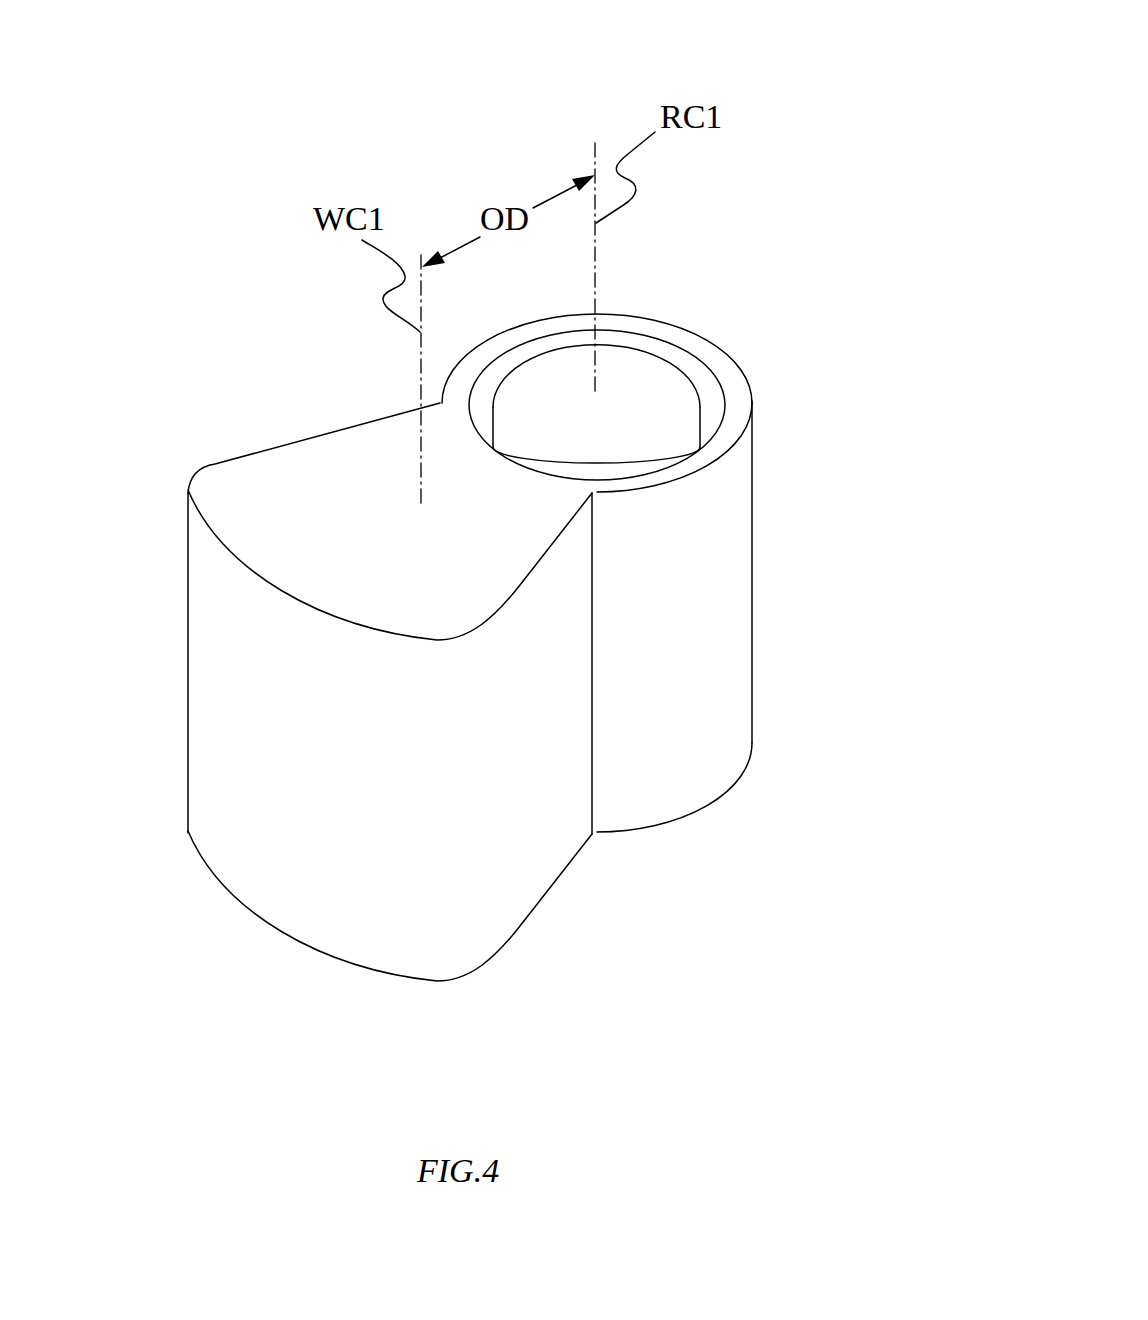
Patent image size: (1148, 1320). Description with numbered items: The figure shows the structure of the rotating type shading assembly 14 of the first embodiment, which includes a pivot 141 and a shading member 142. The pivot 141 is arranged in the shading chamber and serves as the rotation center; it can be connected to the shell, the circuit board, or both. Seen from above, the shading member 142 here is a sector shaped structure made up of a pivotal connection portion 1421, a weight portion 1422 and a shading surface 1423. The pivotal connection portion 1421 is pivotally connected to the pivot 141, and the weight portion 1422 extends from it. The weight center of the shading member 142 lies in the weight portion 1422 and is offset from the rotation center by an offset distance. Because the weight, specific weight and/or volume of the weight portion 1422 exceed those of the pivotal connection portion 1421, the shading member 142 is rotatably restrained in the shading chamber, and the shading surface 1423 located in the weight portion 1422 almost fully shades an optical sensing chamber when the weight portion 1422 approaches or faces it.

The rotating type shading assembly 14 is at (503, 523).
The pivot 141 is at (623, 380).
The shading member 142 is at (348, 656).
The pivotal connection portion 1421 is at (738, 397).
The weight portion 1422 is at (290, 500).
The shading surface 1423 is at (290, 900).